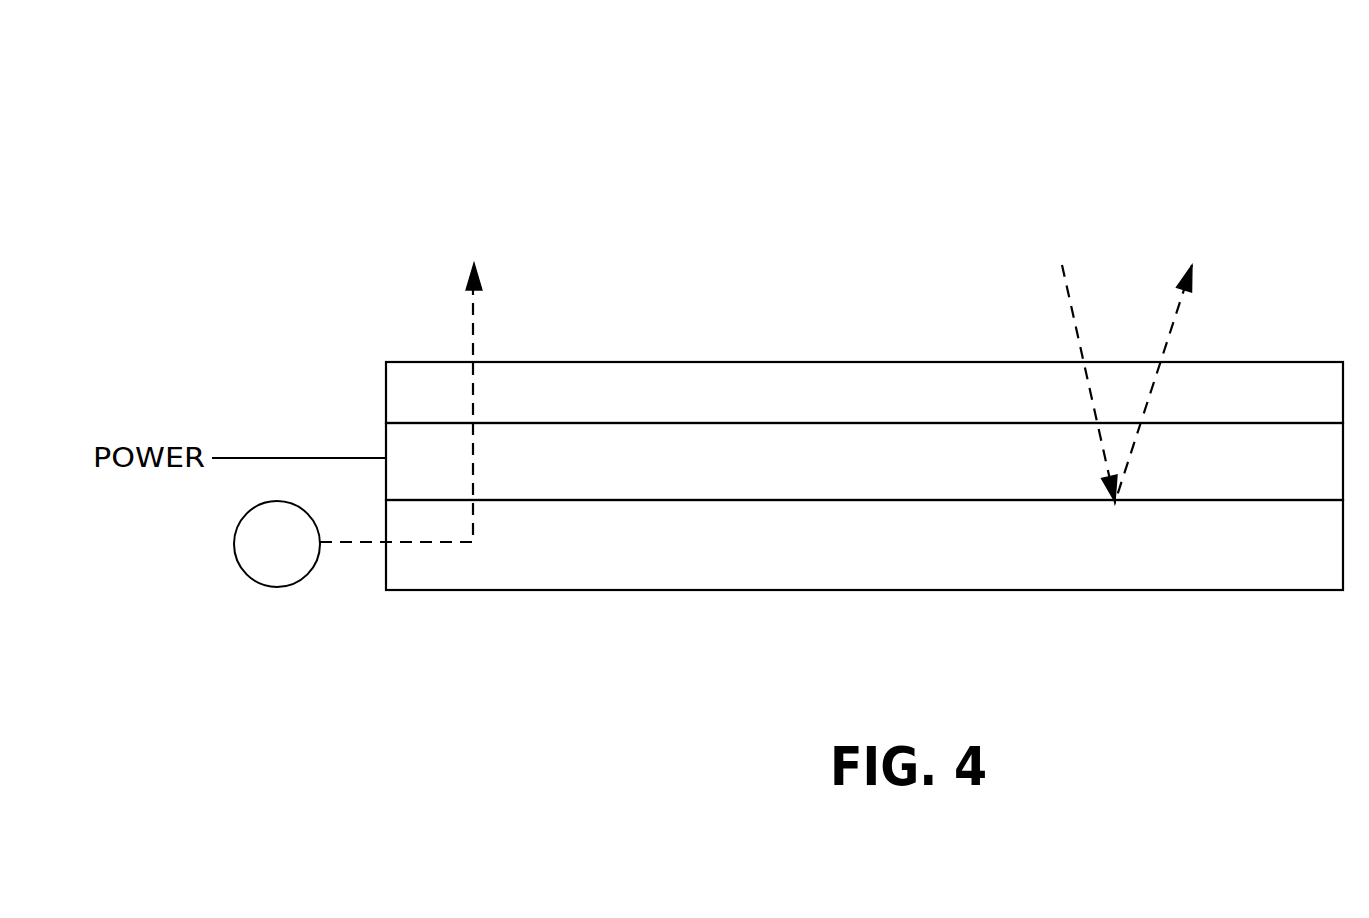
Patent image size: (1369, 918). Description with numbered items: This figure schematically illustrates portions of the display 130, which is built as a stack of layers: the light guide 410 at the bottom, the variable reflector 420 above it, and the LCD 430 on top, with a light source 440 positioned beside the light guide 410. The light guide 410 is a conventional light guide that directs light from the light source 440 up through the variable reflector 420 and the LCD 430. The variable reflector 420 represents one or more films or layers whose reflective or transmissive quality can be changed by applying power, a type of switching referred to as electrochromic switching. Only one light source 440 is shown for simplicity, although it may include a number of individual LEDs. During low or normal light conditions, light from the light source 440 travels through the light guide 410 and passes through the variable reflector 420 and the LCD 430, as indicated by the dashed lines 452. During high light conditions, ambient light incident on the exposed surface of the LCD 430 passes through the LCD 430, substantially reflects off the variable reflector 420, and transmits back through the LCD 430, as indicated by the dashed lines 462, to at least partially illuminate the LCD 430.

The display 130 is at (452, 113).
The light guide 410 is at (864, 545).
The variable reflector 420 is at (864, 461).
The LCD 430 is at (864, 392).
The light source 440 is at (267, 563).
The dashed lines 452 is at (473, 348).
The dashed lines 462 is at (1172, 319).